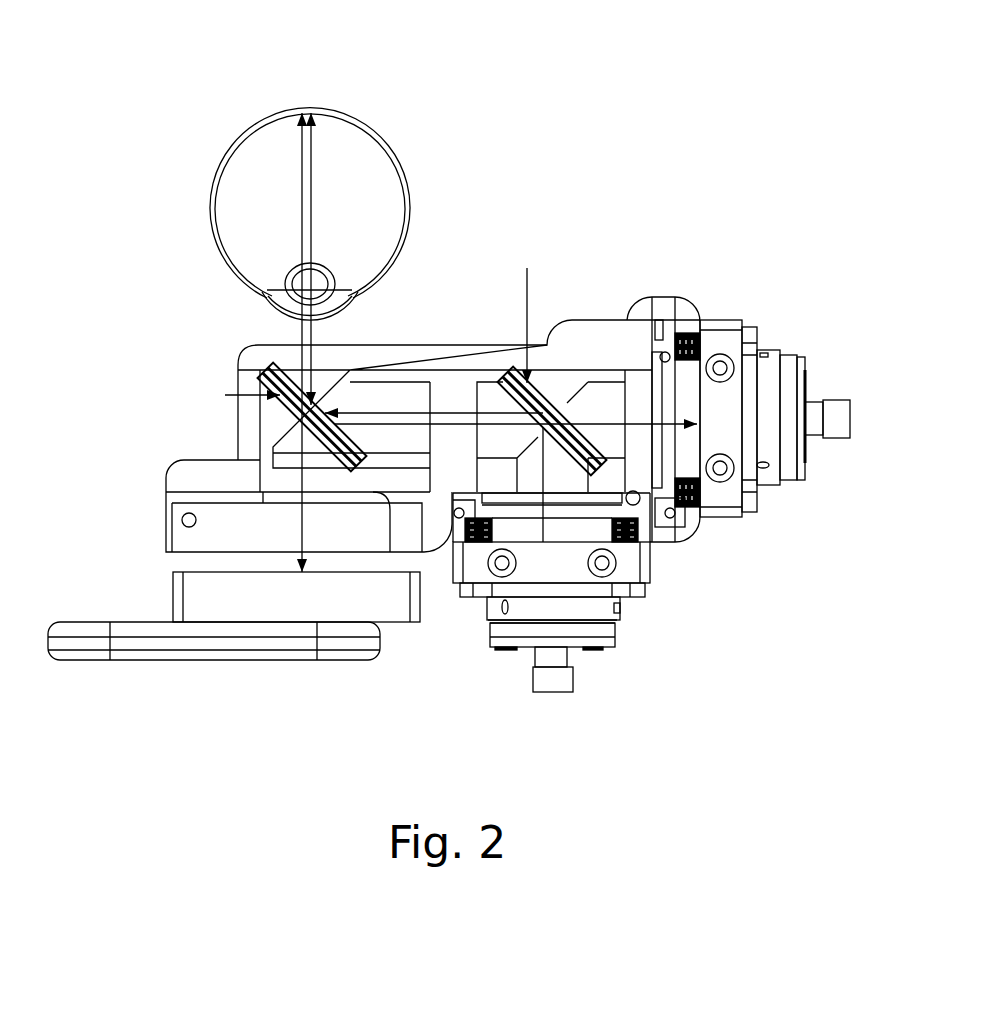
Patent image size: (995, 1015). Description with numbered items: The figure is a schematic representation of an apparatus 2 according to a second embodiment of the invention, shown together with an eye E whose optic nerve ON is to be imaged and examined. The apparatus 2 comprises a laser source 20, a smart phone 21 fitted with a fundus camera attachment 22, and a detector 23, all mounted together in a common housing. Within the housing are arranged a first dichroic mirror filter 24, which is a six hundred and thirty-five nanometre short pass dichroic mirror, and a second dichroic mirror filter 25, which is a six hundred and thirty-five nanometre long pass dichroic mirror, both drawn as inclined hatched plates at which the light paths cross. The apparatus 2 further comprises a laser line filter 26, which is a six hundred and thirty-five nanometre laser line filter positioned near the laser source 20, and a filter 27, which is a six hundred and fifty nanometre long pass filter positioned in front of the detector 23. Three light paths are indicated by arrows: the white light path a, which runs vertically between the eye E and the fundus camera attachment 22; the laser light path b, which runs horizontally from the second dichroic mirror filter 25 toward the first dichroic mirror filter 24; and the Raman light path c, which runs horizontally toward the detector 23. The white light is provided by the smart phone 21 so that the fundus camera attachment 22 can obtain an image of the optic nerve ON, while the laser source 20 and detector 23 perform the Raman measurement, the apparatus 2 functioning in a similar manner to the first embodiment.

The apparatus 2 is at (640, 92).
The eye E is at (400, 145).
The optic nerve ON is at (310, 100).
The white light path a is at (296, 230).
The laser light path b is at (444, 410).
The Raman light path c is at (643, 423).
The laser source 20 is at (615, 623).
The smart phone 21 is at (128, 647).
The fundus camera attachment 22 is at (417, 625).
The detector 23 is at (772, 365).
The first dichroic mirror filter 24 is at (290, 410).
The second dichroic mirror filter 25 is at (562, 400).
The laser line filter 26 is at (636, 508).
The filter 27 is at (663, 330).